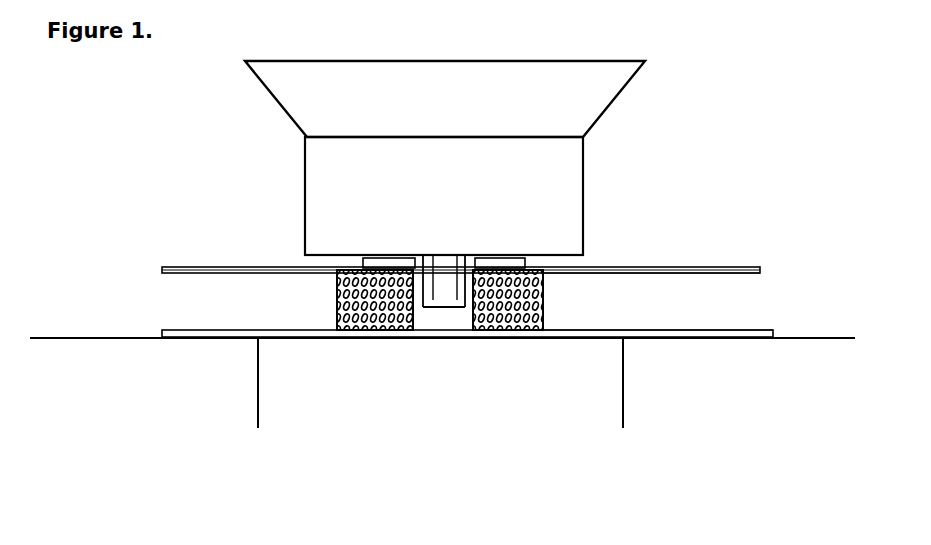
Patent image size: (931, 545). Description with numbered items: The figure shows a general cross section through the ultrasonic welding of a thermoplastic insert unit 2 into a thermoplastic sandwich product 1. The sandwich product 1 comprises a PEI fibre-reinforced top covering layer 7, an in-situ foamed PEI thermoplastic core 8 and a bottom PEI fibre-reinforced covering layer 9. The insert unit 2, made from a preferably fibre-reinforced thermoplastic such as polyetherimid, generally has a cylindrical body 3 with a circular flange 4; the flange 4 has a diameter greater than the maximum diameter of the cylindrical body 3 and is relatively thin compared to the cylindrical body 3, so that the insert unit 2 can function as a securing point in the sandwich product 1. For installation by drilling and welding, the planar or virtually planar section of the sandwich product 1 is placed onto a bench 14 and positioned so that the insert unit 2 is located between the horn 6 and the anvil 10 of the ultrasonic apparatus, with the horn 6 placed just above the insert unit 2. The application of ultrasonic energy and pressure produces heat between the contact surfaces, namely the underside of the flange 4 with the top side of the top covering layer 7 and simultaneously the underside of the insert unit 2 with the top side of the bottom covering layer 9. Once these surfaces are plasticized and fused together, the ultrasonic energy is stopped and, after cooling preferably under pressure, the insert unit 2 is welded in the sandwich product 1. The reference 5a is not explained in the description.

The thermoplastic sandwich product 1 is at (188, 255).
The thermoplastic insert unit 2 is at (411, 308).
The cylindrical body 3 is at (478, 308).
The circular flange 4 is at (375, 259).
The outlet pipe 5a is at (463, 272).
The horn 6 is at (561, 208).
The top covering layer 7 is at (709, 259).
The thermoplastic core 8 is at (759, 282).
The bottom covering layer 9 is at (810, 277).
The anvil 10 is at (430, 382).
The bench 14 is at (729, 397).